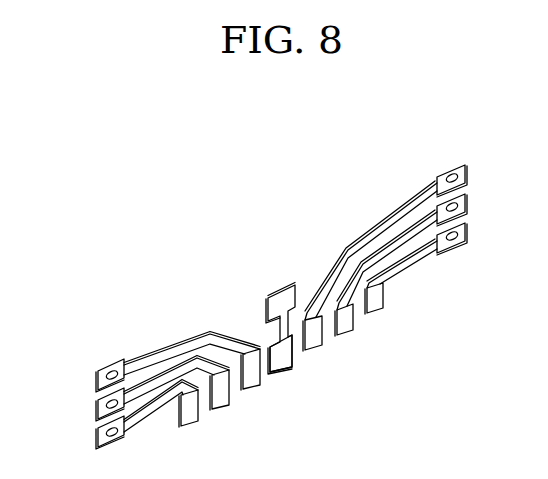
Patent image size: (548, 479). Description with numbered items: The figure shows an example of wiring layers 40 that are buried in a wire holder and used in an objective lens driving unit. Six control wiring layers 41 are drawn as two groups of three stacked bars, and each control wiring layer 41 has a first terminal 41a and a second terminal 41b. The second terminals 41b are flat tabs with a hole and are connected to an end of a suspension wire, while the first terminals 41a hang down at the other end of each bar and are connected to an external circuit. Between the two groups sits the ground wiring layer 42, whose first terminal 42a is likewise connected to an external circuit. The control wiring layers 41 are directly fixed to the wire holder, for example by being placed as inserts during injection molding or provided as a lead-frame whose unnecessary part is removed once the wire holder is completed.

The bus bar assembly 40 is at (101, 298).
The control wiring layer 41 is at (175, 387).
The first terminal of control wiring layer 41a is at (189, 419).
The second terminal of control wiring layer 41b is at (98, 436).
The ground wiring layer 42 is at (280, 329).
The first terminal of ground wiring layer 42a is at (283, 367).